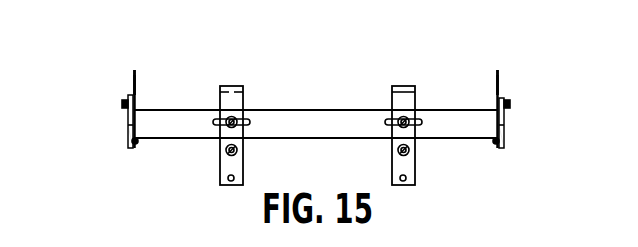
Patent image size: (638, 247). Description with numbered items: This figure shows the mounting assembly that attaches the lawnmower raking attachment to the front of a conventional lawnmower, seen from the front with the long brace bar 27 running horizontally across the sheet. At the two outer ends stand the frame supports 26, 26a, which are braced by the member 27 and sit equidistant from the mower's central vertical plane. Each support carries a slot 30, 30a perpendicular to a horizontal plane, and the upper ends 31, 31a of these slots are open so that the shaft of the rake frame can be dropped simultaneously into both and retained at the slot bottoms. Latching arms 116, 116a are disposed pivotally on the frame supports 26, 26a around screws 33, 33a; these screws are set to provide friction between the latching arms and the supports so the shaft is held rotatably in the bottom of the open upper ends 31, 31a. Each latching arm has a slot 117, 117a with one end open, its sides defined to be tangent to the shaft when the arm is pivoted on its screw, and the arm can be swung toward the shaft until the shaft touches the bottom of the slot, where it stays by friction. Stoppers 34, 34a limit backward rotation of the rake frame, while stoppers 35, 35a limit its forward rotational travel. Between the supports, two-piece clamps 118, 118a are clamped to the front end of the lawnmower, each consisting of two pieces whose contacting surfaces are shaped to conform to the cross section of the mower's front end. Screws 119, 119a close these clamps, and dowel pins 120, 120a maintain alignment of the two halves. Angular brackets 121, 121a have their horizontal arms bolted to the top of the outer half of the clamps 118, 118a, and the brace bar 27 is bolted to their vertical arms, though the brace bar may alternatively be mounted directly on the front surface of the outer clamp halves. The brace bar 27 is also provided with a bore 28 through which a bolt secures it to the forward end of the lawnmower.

The brace bar 27 is at (308, 106).
The frame support 26 is at (508, 137).
The frame support 26a is at (128, 139).
The bore 28 is at (462, 0).
The slot 30 is at (504, 98).
The slot 30a is at (128, 97).
The upper end 31 is at (502, 97).
The upper end 31a is at (130, 95).
The screw 33 is at (494, 143).
The screw 33a is at (140, 142).
The stopper 34 is at (508, 100).
The stopper 34a is at (125, 100).
The stopper 35 is at (512, 108).
The stopper 35a is at (126, 108).
The latching arm 116 is at (494, 100).
The latching arm 116a is at (139, 96).
The slot 117 is at (493, 98).
The slot 117a is at (142, 94).
The two-piece clamp 118 is at (391, 100).
The two-piece clamp 118a is at (245, 98).
The screw 119 is at (397, 150).
The screw 119a is at (226, 150).
The dowel pin 120 is at (406, 180).
The dowel pin 120a is at (231, 181).
The angular bracket 121 is at (398, 87).
The angular bracket 121a is at (228, 88).